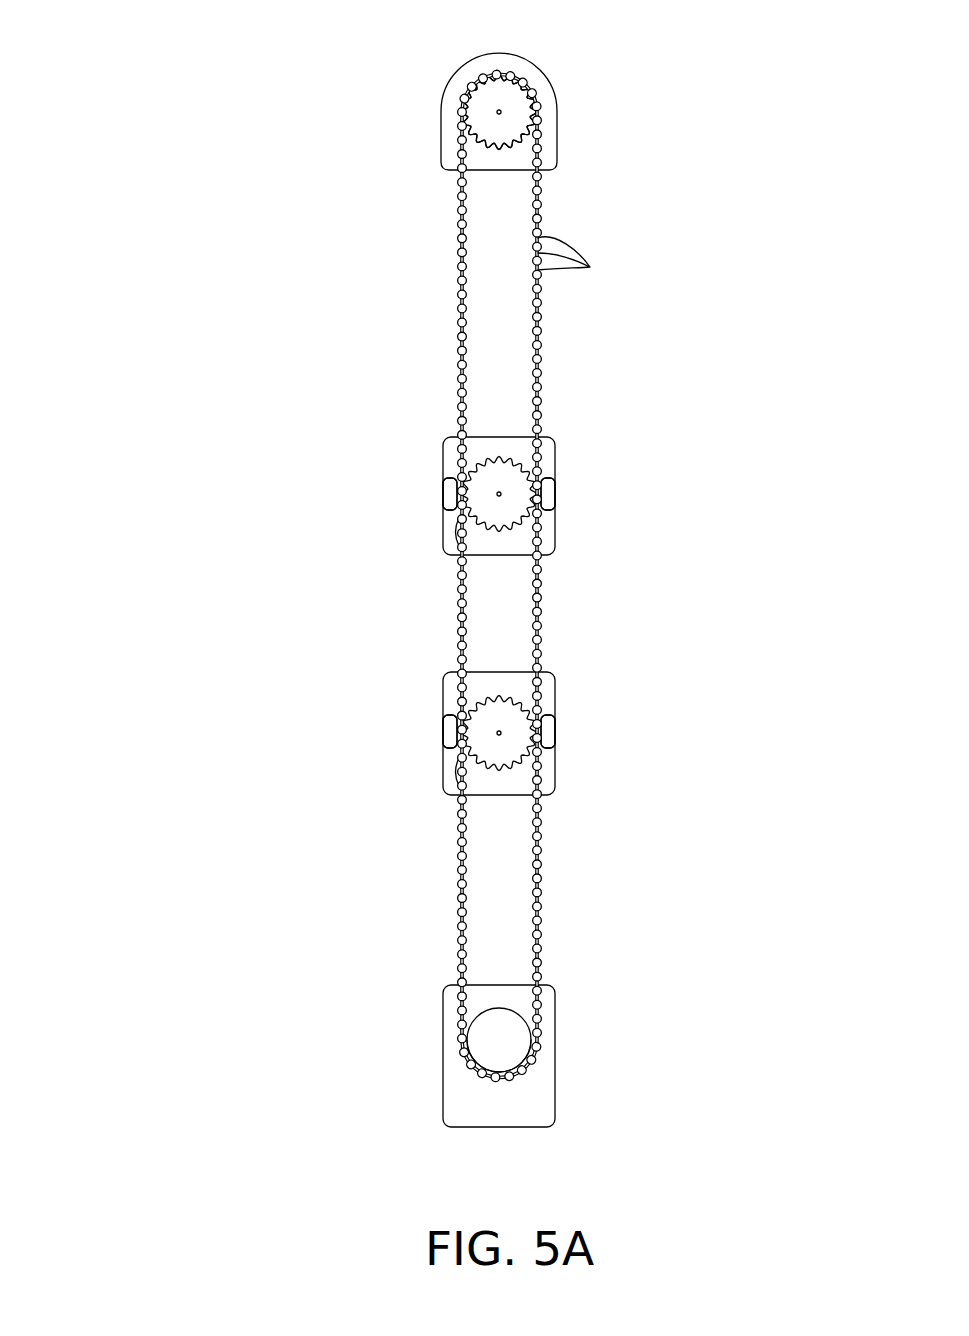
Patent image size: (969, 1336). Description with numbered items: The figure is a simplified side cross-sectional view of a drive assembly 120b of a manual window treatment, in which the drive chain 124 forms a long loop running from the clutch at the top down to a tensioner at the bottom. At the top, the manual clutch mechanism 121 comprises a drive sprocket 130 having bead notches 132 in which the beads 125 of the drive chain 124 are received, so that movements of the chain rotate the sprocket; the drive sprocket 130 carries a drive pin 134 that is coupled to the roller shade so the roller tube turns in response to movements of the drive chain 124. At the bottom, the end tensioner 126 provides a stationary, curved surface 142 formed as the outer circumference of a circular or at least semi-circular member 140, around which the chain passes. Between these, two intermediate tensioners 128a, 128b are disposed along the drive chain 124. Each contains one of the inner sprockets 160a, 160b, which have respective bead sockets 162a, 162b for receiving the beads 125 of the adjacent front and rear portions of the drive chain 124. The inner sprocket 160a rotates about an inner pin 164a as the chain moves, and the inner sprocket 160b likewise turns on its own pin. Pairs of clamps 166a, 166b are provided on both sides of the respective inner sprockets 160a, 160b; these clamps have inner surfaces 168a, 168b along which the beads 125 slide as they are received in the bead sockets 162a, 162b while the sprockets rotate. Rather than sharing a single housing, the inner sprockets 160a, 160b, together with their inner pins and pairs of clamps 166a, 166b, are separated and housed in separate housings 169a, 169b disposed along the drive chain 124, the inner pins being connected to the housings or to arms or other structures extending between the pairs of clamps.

The drive assembly 120b is at (180, 72).
The manual clutch mechanism 121 is at (425, 143).
The drive chain 124 is at (425, 318).
The beads 125 is at (590, 257).
The end tensioner 126 is at (575, 1050).
The intermediate tensioner 128a is at (573, 537).
The intermediate tensioner 128b is at (570, 705).
The drive sprocket 130 is at (520, 113).
The bead notches 132 is at (503, 150).
The drive pin 134 is at (498, 108).
The circular member 140 is at (482, 1038).
The curved surface 142 is at (477, 1073).
The inner sprocket 160a is at (456, 446).
The inner sprocket 160b is at (456, 708).
The bead sockets 162a is at (518, 466).
The bead sockets 162b is at (493, 768).
The inner pin 164a is at (499, 490).
The clamps 166a is at (450, 494).
The clamps 166b is at (447, 737).
The inner surfaces 168a is at (449, 492).
The inner surfaces 168b is at (448, 730).
The housing 169a is at (455, 530).
The housing 169b is at (455, 790).